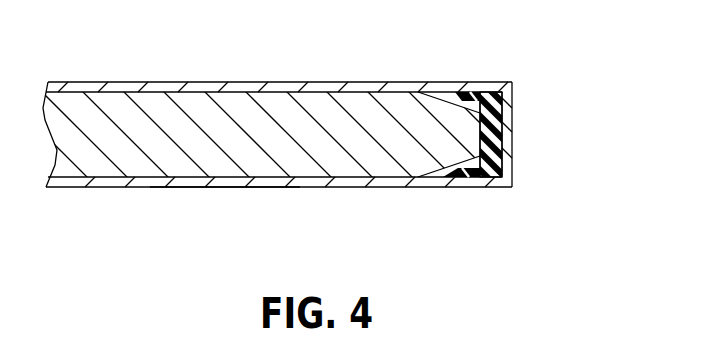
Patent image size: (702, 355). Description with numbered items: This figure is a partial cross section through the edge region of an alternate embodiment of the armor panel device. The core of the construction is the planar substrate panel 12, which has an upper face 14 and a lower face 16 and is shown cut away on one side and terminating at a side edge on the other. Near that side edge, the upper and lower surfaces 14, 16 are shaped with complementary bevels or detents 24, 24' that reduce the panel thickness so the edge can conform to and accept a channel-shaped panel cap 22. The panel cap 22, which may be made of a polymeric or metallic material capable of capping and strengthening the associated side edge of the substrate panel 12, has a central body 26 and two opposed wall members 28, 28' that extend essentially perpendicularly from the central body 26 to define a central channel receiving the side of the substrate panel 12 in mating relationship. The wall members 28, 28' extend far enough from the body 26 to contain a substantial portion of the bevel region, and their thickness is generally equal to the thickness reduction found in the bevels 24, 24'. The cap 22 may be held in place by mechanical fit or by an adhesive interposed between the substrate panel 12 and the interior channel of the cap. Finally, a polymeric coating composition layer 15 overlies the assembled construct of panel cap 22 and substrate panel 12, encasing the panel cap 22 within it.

The substrate panel 12 is at (215, 127).
The upper face 14 is at (353, 91).
The polymeric coating composition layer 15 is at (228, 180).
The lower face 16 is at (352, 181).
The panel cap 22 is at (495, 146).
The bevel 24 is at (449, 59).
The bevel 24' is at (449, 216).
The central body 26 is at (513, 100).
The wall member 28 is at (500, 66).
The wall member 28' is at (501, 206).